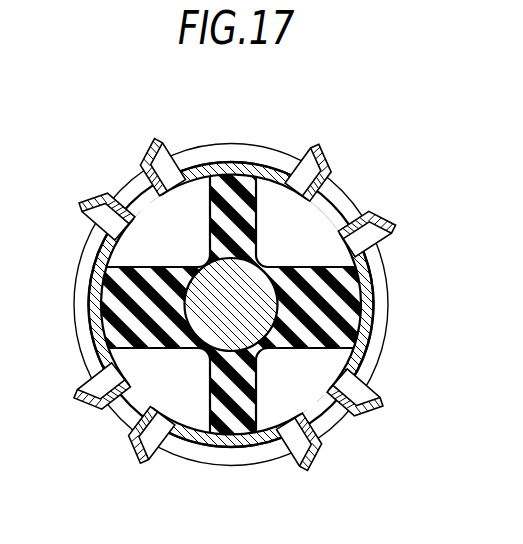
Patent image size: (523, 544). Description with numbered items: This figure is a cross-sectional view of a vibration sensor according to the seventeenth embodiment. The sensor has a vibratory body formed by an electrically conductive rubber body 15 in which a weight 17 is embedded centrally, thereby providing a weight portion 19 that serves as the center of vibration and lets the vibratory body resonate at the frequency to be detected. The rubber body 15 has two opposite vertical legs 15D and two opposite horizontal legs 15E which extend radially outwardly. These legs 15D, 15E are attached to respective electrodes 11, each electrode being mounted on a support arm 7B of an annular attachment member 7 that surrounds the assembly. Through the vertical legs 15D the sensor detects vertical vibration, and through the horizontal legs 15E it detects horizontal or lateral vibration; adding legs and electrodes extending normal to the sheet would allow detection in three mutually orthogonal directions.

The annular attachment member 7 is at (328, 196).
The support arms 7B is at (236, 151).
The electrodes 11 is at (272, 172).
The conductive rubber body 15 is at (261, 300).
The vertical legs 15D is at (155, 273).
The horizontal legs 15E is at (223, 212).
The weight 17 is at (253, 287).
The weight portion 19 is at (267, 353).